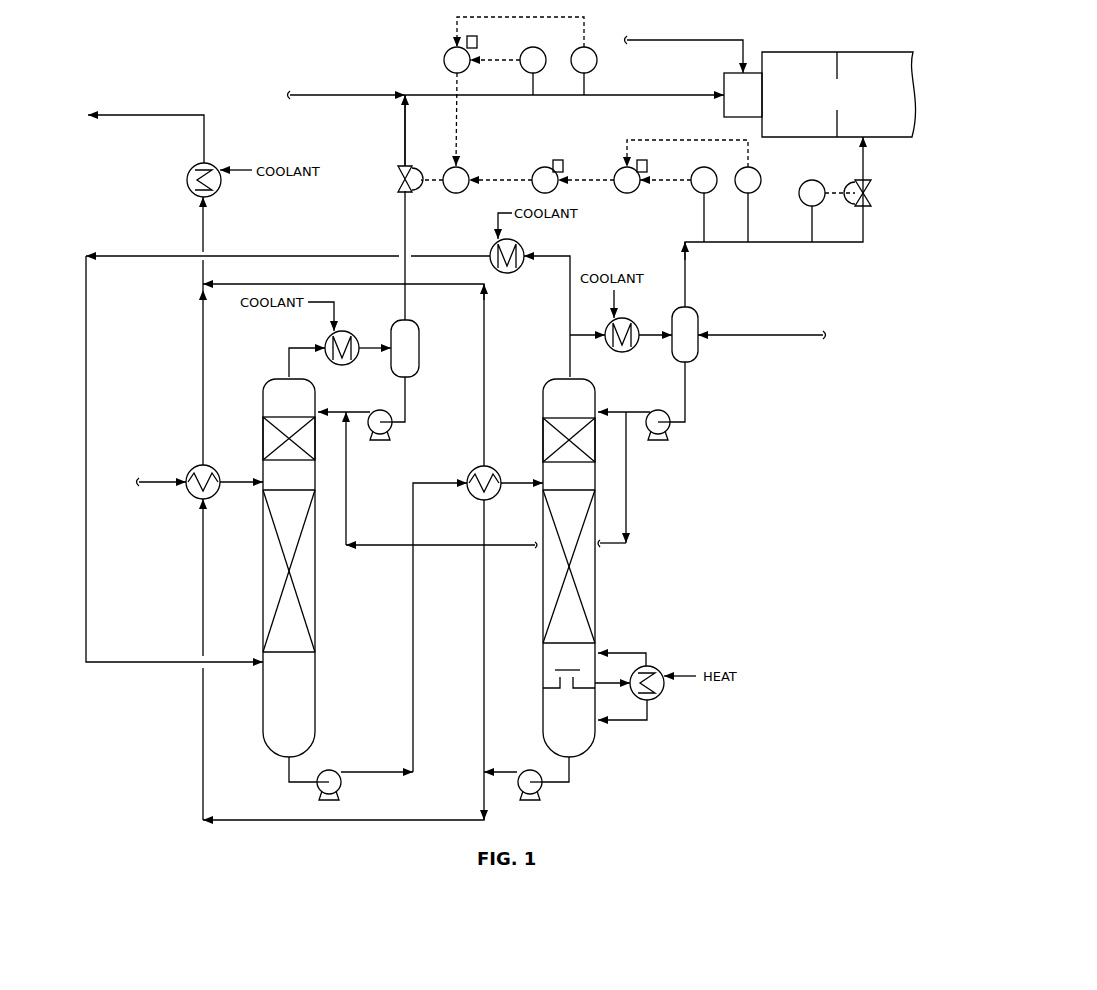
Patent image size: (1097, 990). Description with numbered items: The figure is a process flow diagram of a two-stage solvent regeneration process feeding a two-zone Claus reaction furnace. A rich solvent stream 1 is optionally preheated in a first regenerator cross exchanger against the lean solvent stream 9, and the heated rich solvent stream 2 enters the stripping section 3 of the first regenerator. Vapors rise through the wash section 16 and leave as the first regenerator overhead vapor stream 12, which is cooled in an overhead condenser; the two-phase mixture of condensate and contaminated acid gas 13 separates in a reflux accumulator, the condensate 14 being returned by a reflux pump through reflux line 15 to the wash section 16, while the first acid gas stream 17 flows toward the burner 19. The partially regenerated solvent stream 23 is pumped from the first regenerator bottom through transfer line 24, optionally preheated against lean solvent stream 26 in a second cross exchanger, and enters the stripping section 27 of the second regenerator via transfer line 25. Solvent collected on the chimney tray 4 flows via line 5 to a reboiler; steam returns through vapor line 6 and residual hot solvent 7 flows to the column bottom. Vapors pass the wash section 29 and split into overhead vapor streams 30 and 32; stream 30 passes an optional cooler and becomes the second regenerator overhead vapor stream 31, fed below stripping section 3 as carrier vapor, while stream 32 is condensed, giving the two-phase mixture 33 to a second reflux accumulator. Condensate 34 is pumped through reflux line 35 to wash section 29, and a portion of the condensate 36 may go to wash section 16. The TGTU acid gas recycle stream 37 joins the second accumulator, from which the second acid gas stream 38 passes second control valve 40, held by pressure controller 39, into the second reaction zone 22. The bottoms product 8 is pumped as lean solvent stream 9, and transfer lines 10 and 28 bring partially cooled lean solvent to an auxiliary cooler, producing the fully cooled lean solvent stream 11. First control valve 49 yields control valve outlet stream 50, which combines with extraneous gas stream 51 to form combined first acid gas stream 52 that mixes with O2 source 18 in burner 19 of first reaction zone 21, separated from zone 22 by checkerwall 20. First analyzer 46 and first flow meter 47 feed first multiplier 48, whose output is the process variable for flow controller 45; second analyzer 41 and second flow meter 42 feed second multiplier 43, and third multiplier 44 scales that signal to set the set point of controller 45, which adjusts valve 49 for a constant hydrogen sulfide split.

The rich solvent stream 1 is at (172, 480).
The heated rich solvent stream 2 is at (247, 486).
The stripping section 3 is at (280, 572).
The chimney tray 4 is at (552, 689).
The line 5 is at (608, 686).
The vapor line 6 is at (634, 650).
The residual hot solvent 7 is at (634, 721).
The bottoms product 8 is at (570, 774).
The lean solvent stream 9 is at (203, 602).
The transfer line 10 is at (203, 378).
The fully cooled lean solvent stream 11 is at (206, 128).
The first regenerator overhead vapor stream 12 is at (303, 345).
The two-phase mixture of condensate and contaminated acid gas 13 is at (372, 350).
The condensate 14 is at (407, 400).
The reflux line 15 is at (356, 408).
The wash section 16 is at (275, 442).
The first acid gas stream 17 is at (404, 242).
The O2 source 18 is at (695, 38).
The burner 19 is at (743, 95).
The refractory checkerwall or choke ring 20 is at (837, 70).
The first reaction zone 21 is at (800, 98).
The second reaction zone 22 is at (873, 98).
The partially regenerated solvent stream 23 is at (288, 776).
The transfer line 24 is at (412, 644).
The transfer line 25 is at (517, 487).
The lean solvent stream 26 is at (482, 606).
The stripping section 27 is at (556, 577).
The transfer line 28 is at (485, 369).
The wash section 29 is at (555, 443).
The second regenerator overhead vapor stream 30 is at (568, 314).
The second regenerator overhead vapor stream 31 is at (289, 255).
The partial hot overhead vapor stream 32 is at (578, 338).
The two-phase mixture of condensate and acid gas 33 is at (645, 332).
The condensate 34 is at (686, 392).
The reflux line 35 is at (620, 410).
The portion of the condensate 36 is at (628, 486).
The TGTU acid gas recycle stream 37 is at (760, 334).
The second acid gas stream 38 is at (690, 241).
The pressure controller 39 is at (805, 183).
The second control valve 40 is at (853, 184).
The second continuous online analyzer 41 is at (696, 168).
The second flow meter 42 is at (744, 168).
The second multiplier 43 is at (616, 169).
The third multiplier 44 is at (537, 169).
The flow controller 45 is at (447, 192).
The first continuous online analyzer 46 is at (525, 48).
The first flow meter 47 is at (573, 48).
The first multiplier 48 is at (446, 55).
The first control valve 49 is at (399, 179).
The control valve outlet stream 50 is at (404, 138).
The extraneous gas stream 51 is at (350, 93).
The combined first acid gas stream 52 is at (435, 93).